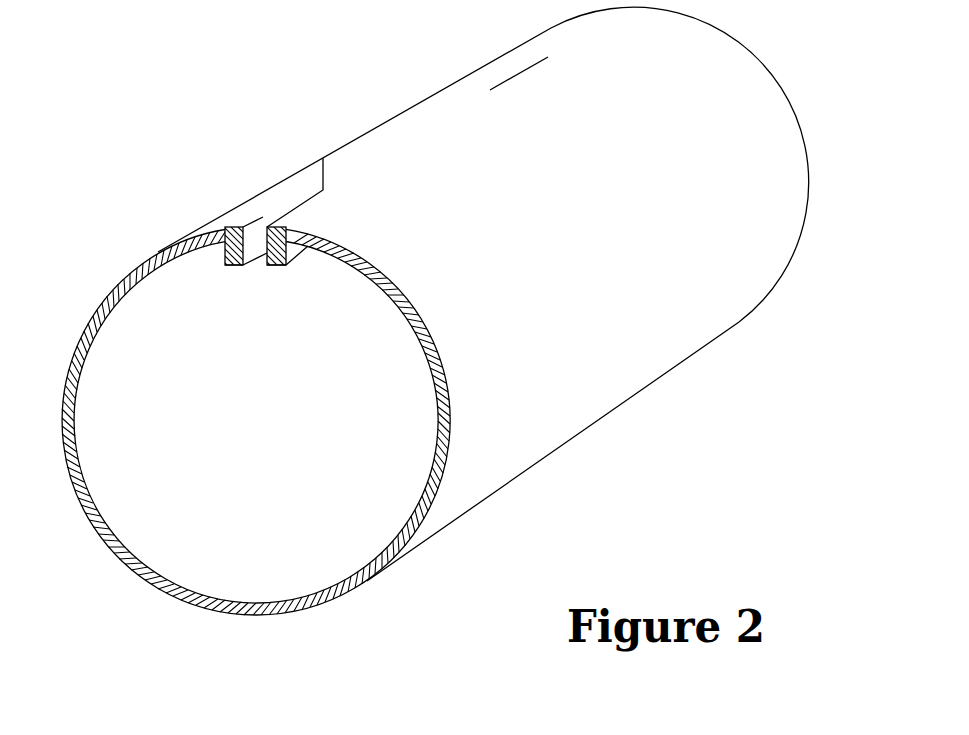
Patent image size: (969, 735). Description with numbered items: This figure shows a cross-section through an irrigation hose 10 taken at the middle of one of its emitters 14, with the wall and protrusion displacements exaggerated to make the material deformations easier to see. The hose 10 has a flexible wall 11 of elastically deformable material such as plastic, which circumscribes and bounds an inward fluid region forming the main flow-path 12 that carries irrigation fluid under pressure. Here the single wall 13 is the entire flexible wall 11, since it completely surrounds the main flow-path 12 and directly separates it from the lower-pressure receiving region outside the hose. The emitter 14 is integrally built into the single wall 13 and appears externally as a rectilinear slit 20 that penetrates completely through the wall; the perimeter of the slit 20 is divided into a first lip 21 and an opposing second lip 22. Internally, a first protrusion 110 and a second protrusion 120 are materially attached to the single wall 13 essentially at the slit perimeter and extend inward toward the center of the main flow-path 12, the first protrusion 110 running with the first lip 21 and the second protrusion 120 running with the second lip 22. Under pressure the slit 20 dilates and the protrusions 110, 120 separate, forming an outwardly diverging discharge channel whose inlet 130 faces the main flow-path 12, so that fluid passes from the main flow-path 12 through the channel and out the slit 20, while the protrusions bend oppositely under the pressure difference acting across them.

The hose 10 is at (627, 415).
The flexible wall 11 is at (150, 583).
The main flow-path 12 is at (250, 450).
The single wall 13 is at (153, 255).
The emitter 14 is at (312, 213).
The slit 20 is at (322, 188).
The first lip 21 is at (265, 214).
The second lip 22 is at (270, 225).
The first protrusion 110 is at (239, 267).
The second protrusion 120 is at (277, 266).
The inlet 130 is at (258, 272).